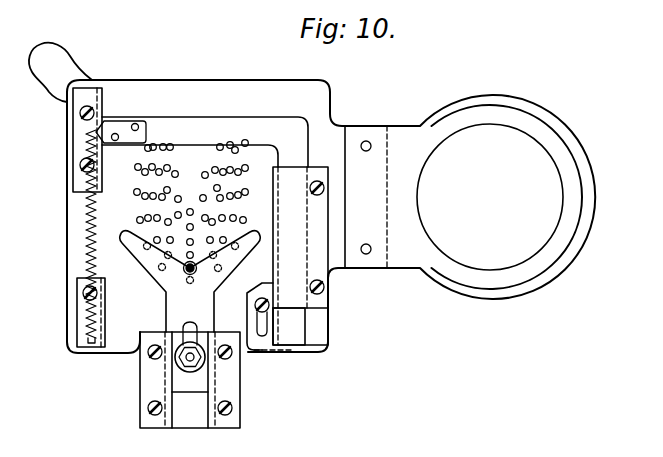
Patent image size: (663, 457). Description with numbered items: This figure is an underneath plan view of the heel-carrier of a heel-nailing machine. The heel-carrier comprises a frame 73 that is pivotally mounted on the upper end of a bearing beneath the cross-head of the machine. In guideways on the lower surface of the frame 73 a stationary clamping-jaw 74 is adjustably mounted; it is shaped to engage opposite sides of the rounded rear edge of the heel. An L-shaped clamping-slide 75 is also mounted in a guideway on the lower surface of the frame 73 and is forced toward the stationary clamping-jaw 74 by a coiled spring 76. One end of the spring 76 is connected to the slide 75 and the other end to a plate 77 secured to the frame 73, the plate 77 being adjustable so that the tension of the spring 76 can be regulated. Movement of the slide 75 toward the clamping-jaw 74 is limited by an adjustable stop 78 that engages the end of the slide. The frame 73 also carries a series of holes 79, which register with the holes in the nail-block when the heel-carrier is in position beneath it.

The frame 73 is at (223, 86).
The stationary clamping-jaw 74 is at (167, 303).
The L-shaped clamping-slide 75 is at (238, 124).
The coiled spring 76 is at (84, 213).
The plate 77 is at (78, 308).
The adjustable stop 78 is at (283, 353).
The series of holes 79 is at (170, 153).